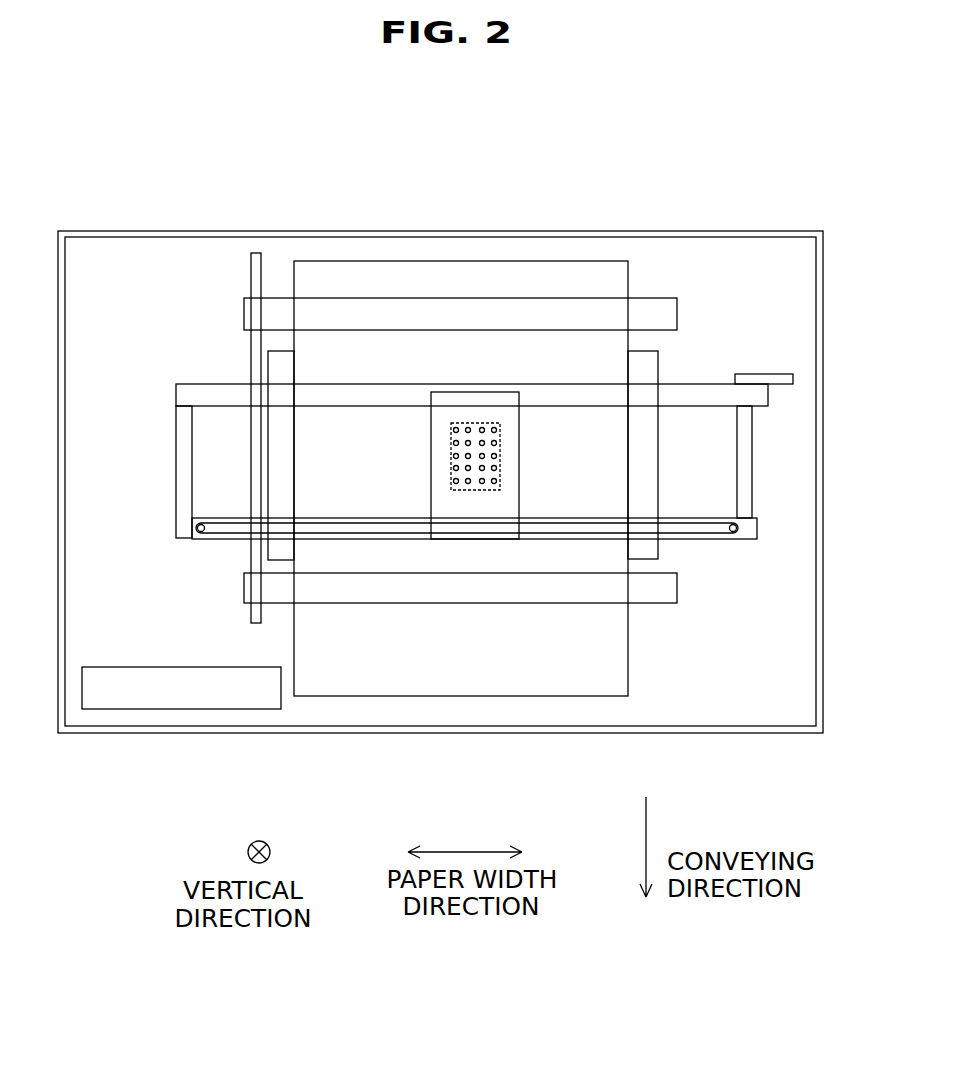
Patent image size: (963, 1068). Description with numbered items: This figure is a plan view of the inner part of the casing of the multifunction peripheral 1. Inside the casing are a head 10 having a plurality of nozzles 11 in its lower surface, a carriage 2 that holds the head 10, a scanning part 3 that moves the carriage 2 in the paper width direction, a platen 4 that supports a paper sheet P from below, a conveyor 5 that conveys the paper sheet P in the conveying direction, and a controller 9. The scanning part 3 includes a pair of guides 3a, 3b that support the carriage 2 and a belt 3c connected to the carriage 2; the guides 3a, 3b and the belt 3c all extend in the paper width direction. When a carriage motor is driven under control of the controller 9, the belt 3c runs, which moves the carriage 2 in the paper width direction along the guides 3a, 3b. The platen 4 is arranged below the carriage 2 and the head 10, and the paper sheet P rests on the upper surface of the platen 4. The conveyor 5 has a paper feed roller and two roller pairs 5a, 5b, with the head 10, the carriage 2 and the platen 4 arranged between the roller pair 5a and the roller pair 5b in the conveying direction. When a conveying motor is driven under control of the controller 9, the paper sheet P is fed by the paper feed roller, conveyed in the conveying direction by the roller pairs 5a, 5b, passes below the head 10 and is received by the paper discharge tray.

The multifunction peripheral 1 is at (742, 209).
The paper sheet P is at (470, 275).
The carriage 2 is at (475, 392).
The scanning part 3 is at (764, 368).
The guide 3a is at (768, 397).
The guide 3b is at (757, 527).
The belt 3c is at (713, 539).
The platen 4 is at (653, 372).
The conveyor 5 is at (221, 309).
The roller pair 5a is at (254, 316).
The roller pair 5b is at (251, 588).
The controller 9 is at (118, 667).
The head 10 is at (451, 455).
The nozzles 11 is at (500, 443).